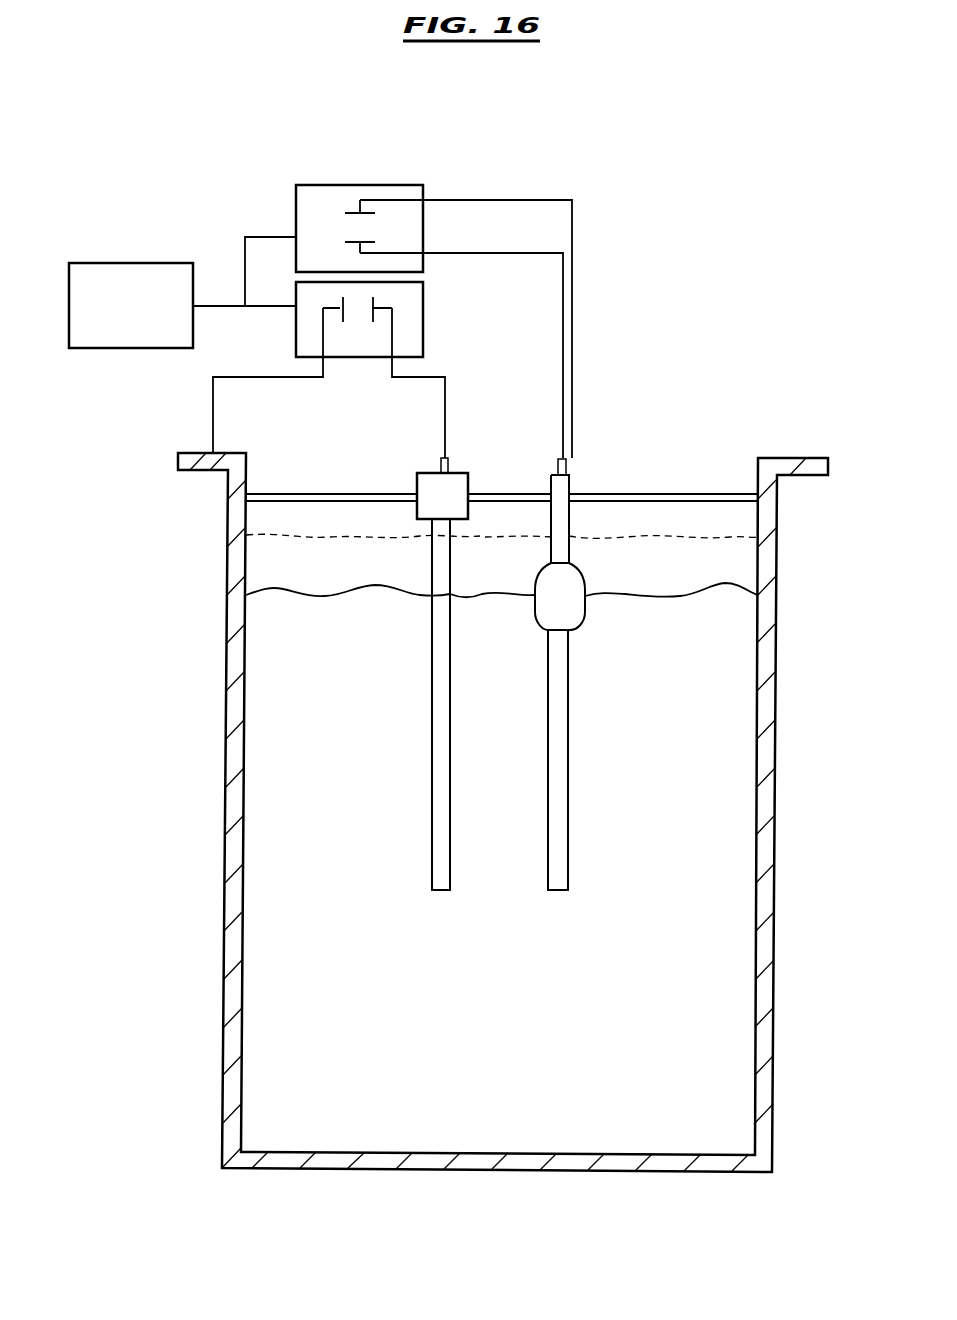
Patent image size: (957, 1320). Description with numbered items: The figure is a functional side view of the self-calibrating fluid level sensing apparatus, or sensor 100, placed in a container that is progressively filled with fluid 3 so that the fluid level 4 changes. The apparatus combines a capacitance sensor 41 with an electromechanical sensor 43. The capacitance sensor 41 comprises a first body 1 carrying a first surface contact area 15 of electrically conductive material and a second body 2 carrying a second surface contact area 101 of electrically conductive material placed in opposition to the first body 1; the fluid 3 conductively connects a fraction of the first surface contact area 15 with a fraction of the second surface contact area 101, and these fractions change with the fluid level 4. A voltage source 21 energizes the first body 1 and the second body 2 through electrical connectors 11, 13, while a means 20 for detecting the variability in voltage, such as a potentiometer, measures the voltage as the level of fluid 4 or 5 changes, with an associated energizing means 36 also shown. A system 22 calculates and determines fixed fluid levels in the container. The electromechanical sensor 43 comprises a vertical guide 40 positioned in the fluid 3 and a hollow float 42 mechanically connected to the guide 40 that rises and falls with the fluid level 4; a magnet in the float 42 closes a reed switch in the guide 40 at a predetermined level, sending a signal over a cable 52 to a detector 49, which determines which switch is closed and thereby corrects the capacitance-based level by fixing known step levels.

The first body 1 is at (438, 673).
The second body 2 is at (773, 820).
The fluid 3 is at (682, 1036).
The fluid level 4 is at (720, 592).
The fluid 5 is at (685, 540).
The electrical connector 11 is at (213, 398).
The electrical connector 13 is at (445, 432).
The first surface contact area 15 is at (431, 750).
The means for detecting the variability in voltage 20 is at (423, 291).
The voltage source 21 is at (357, 302).
The system for calculation and determination of fixed fluid levels 22 is at (138, 262).
The means for energizing 36 is at (353, 228).
The guide 40 is at (558, 777).
The capacitance sensor 41 is at (440, 783).
The float 42 is at (573, 603).
The electromechanical sensor 43 is at (528, 856).
The detector 49 is at (296, 223).
The cable 52 is at (562, 320).
The sensor 100 is at (668, 338).
The second surface contact area 101 is at (756, 738).